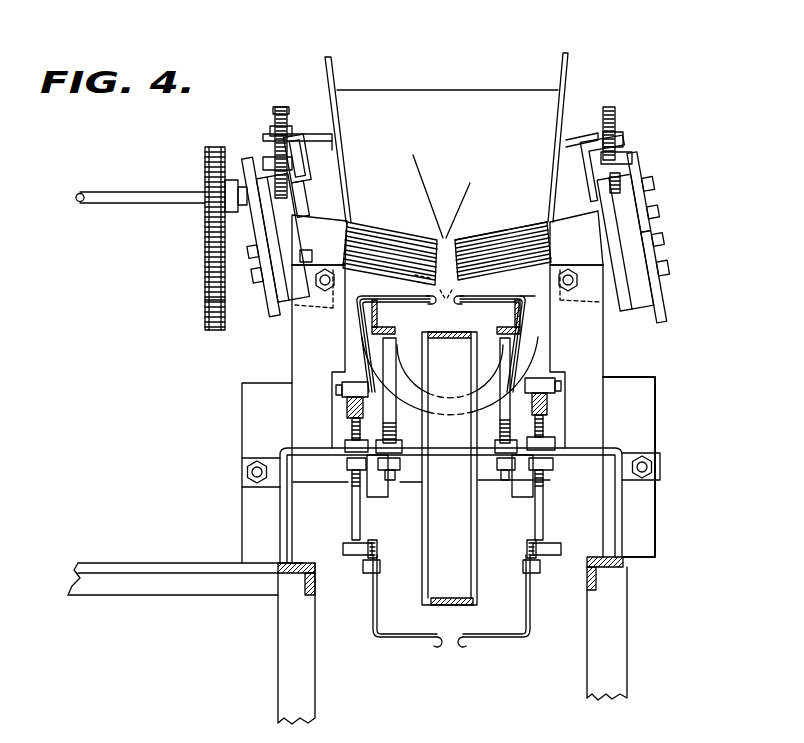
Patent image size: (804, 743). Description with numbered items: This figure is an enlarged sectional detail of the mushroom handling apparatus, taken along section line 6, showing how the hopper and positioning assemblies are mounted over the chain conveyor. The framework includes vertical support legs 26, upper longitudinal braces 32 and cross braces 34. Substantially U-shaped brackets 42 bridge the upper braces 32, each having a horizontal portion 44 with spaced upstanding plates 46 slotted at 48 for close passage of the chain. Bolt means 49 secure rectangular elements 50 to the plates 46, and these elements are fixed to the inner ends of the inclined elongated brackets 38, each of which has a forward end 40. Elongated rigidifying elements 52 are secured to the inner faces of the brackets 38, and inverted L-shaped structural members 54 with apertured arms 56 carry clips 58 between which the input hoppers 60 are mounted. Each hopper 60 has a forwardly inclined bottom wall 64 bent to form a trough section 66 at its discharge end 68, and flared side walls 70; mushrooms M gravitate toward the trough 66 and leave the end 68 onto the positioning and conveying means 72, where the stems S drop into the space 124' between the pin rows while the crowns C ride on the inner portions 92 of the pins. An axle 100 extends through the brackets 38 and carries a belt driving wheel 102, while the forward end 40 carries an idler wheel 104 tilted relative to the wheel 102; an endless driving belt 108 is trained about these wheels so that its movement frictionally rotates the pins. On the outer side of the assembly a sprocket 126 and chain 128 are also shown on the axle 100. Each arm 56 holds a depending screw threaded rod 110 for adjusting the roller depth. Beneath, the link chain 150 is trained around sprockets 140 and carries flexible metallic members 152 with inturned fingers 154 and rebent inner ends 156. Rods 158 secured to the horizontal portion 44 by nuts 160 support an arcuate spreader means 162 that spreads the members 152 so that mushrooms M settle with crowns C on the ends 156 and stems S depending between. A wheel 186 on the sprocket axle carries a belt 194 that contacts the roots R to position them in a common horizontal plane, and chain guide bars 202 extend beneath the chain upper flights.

The vertical support legs 26 is at (612, 670).
The upper longitudinal braces 32 is at (290, 585).
The cross braces 34 is at (148, 590).
The elongated brackets 38 is at (273, 228).
The forward end 40 is at (600, 232).
The U-shaped brackets 42 is at (625, 520).
The horizontal portion 44 is at (458, 457).
The upstanding plates 46 is at (328, 360).
The slot 48 is at (557, 422).
The bolt means 49 is at (325, 292).
The rectangular elements 50 is at (320, 253).
The rigidifying elements 52 is at (323, 210).
The structural members 54 is at (318, 176).
The apertured arms 56 is at (305, 163).
The clips 58 is at (308, 130).
The input hoppers 60 is at (464, 121).
The bottom wall 64 is at (505, 128).
The trough section 66 is at (452, 208).
The discharge end 68 is at (497, 232).
The side walls 70 is at (568, 52).
The positioning and conveying means 72 is at (477, 247).
The inner portions 92 is at (382, 280).
The axle 100 is at (106, 196).
The belt driving wheel 102 is at (255, 168).
The idler wheel 104 is at (657, 290).
The driving belt 108 is at (630, 262).
The screw threaded rod 110 is at (612, 118).
The divider 124' is at (456, 199).
The sprocket 126 is at (205, 178).
The chain 128 is at (207, 317).
The sprockets 140 is at (547, 513).
The link chain 150 is at (545, 560).
The flexible metallic members 152 is at (537, 347).
The inturned fingers 154 is at (510, 298).
The rebent inner ends 156 is at (432, 305).
The rods 158 is at (398, 422).
The nuts 160 is at (493, 462).
The spreader means 162 is at (405, 388).
The wheel 186 is at (427, 578).
The belt 194 is at (463, 603).
The chain guide bars 202 is at (548, 398).
The section line 6 is at (603, 105).
The crowns C is at (443, 270).
The mushrooms M is at (474, 283).
The stems S is at (455, 317).
The roots R is at (447, 363).